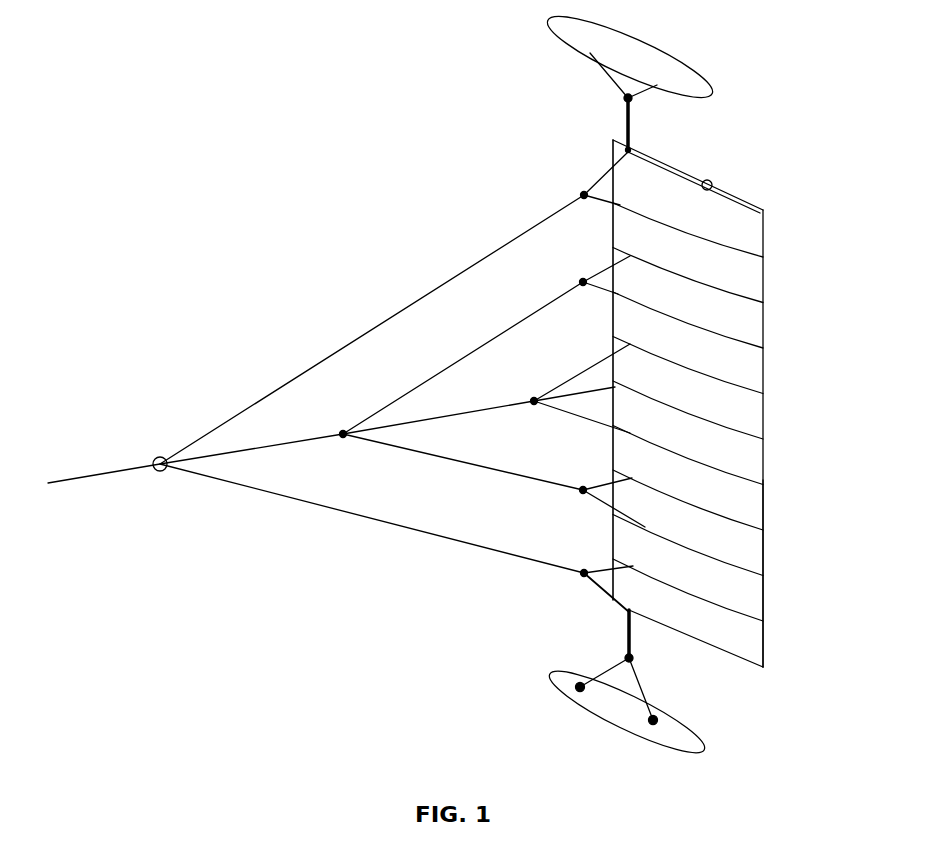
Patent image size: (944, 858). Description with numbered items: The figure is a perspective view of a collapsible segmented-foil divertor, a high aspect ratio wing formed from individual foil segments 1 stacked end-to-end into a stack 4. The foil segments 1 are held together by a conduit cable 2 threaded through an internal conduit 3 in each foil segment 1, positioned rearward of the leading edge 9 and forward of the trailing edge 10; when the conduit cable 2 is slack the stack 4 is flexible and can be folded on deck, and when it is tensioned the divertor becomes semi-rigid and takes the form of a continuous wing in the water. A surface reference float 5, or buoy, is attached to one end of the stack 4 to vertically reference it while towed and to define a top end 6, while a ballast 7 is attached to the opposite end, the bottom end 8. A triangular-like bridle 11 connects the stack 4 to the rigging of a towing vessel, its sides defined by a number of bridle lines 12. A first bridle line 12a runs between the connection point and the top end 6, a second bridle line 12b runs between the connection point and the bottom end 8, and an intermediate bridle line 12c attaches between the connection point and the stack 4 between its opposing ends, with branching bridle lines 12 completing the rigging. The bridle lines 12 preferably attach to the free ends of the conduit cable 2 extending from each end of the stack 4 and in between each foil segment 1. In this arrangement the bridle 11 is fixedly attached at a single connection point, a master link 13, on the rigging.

The foil segment 1 is at (742, 412).
The conduit cable 2 is at (627, 125).
The internal conduit 3 is at (630, 148).
The stack 4 is at (798, 577).
The surface reference float 5 is at (568, 40).
The top end 6 is at (733, 185).
The ballast 7 is at (558, 690).
The bottom end 8 is at (720, 656).
The leading edge 9 is at (604, 220).
The trailing edge 10 is at (772, 278).
The bridle 11 is at (346, 389).
The bridle lines 12 is at (440, 457).
The first bridle line 12a is at (360, 333).
The second bridle line 12b is at (243, 490).
The intermediate bridle line 12c is at (298, 440).
The master link 13 is at (155, 458).